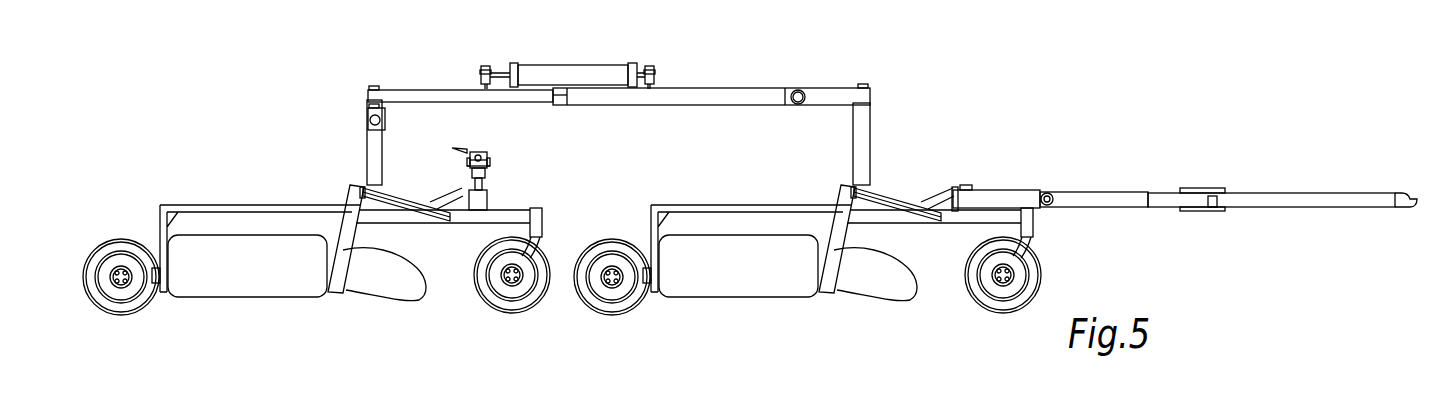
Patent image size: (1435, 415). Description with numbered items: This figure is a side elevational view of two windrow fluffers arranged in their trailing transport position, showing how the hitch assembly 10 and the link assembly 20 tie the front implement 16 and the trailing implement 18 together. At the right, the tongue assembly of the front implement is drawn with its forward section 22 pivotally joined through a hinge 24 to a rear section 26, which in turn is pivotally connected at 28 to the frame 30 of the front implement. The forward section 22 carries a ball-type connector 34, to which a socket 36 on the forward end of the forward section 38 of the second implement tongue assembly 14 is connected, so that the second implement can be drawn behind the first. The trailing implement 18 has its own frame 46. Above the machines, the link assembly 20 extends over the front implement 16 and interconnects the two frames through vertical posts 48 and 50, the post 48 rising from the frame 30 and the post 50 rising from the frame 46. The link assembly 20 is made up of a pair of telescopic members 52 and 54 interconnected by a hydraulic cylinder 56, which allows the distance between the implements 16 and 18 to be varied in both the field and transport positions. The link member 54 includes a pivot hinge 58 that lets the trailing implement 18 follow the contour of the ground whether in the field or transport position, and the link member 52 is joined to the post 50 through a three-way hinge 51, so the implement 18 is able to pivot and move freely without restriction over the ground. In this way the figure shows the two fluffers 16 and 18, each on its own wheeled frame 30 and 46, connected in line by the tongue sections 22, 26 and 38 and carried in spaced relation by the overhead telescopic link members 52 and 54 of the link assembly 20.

The hitch assembly 10 is at (1317, 193).
The tongue assembly 14 is at (475, 152).
The windrow fluffer 16 is at (750, 294).
The windrow fluffer 18 is at (220, 297).
The link assembly 20 is at (551, 104).
The forward section 22 is at (1080, 193).
The hinge 24 is at (1047, 193).
The rear section 26 is at (983, 196).
The pivotal connection 28 is at (966, 185).
The frame 30 is at (410, 213).
The ball-type connector 34 is at (1212, 196).
The socket 36 is at (490, 161).
The forward section 38 is at (481, 152).
The frame 46 is at (892, 200).
The vertical post 48 is at (853, 131).
The vertical post 50 is at (373, 150).
The three-way hinge 51 is at (368, 110).
The telescopic member 52 is at (445, 102).
The telescopic member 54 is at (677, 100).
The hydraulic cylinder 56 is at (577, 83).
The pivot hinge 58 is at (798, 91).